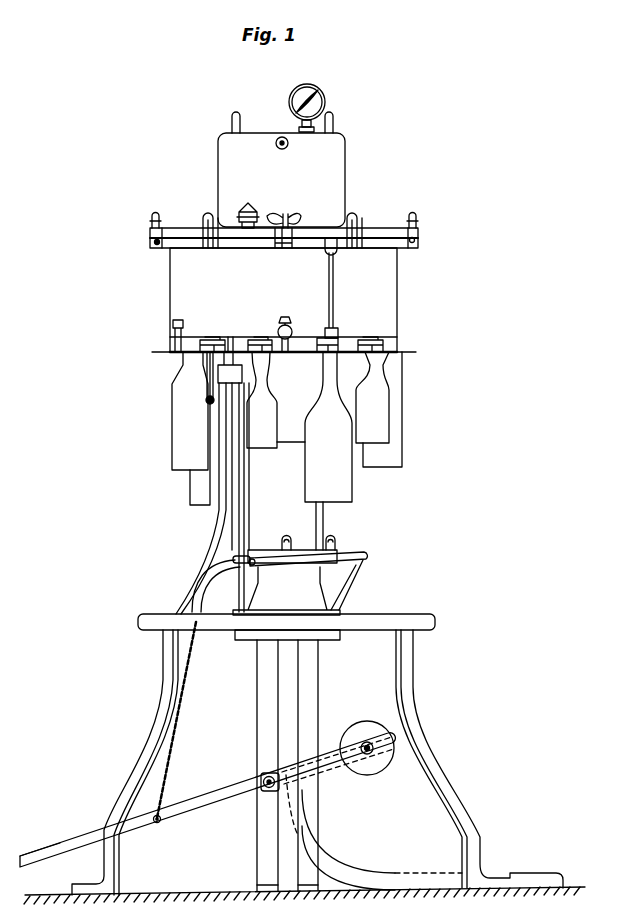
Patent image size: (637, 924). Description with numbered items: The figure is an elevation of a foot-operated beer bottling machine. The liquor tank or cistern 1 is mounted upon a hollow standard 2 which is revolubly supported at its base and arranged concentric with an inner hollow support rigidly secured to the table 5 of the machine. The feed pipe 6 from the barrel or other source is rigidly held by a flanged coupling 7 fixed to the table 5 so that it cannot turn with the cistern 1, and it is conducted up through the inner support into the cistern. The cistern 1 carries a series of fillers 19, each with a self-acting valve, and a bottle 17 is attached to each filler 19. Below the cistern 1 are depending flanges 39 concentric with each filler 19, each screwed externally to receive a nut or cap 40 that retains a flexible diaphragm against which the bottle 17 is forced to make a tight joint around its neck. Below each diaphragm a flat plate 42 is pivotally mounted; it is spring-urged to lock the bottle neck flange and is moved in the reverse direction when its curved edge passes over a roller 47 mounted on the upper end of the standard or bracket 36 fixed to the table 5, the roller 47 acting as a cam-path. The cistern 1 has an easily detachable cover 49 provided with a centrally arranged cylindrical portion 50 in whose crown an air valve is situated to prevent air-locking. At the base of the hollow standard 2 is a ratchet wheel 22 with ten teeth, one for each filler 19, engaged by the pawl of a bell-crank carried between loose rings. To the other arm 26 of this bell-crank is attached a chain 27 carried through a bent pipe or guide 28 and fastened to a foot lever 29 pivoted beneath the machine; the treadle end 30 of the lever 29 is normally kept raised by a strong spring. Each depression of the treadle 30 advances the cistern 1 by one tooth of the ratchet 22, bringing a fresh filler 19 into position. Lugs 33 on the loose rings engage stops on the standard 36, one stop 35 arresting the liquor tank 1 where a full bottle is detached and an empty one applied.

The liquor tank or cistern 1 is at (170, 277).
The hollow standard 2 is at (323, 522).
The table 5 is at (158, 600).
The feed pipe 6 is at (338, 853).
The flanged coupling 7 is at (327, 632).
The bottle 17 is at (190, 485).
The filler 19 is at (207, 378).
The ratchet wheel 22 is at (262, 556).
The arm of the bell-crank 26 is at (342, 551).
The chain 27 is at (183, 697).
The bent pipe or guide 28 is at (348, 584).
The foot lever 29 is at (220, 808).
The treadle end 30 is at (63, 847).
The lugs 33 is at (294, 556).
The stop 35 is at (252, 562).
The standard or bracket 36 is at (210, 539).
The depending flange 39 is at (212, 337).
The nut or cap 40 is at (260, 337).
The flat plate 42 is at (290, 340).
The roller 47 is at (231, 337).
The cover 49 is at (188, 228).
The cylindrical portion 50 is at (345, 148).